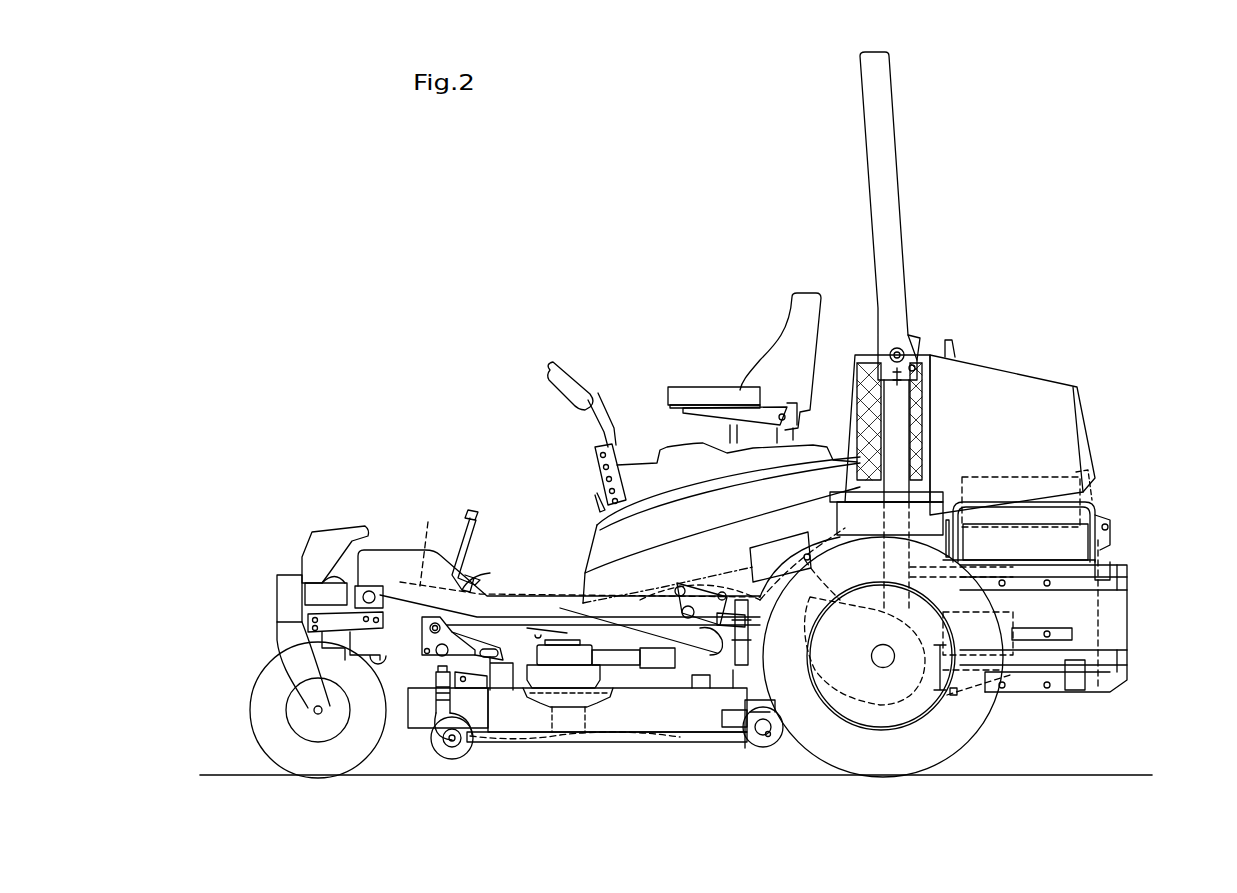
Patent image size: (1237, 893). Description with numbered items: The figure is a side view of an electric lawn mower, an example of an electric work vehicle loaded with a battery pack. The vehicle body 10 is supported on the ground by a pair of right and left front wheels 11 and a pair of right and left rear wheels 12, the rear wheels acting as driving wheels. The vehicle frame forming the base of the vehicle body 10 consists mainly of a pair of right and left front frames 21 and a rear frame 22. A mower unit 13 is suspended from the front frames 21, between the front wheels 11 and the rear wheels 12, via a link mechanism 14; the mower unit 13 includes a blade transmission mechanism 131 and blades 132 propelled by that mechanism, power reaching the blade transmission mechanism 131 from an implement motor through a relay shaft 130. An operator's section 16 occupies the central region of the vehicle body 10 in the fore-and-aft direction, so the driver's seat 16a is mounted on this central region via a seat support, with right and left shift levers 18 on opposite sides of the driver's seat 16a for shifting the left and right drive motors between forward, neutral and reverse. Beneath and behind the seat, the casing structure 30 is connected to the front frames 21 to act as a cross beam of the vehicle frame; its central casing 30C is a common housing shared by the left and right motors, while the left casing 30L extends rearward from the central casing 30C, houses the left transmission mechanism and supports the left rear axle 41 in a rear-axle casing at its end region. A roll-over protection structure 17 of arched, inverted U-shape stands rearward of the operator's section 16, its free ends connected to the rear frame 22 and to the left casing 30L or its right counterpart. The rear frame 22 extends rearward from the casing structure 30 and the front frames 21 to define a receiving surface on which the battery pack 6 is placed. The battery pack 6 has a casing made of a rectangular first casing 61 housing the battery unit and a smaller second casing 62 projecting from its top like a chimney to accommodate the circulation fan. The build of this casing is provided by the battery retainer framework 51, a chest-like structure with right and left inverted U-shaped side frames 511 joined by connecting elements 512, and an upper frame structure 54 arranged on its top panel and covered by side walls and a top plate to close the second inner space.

The vehicle body 10 is at (405, 553).
The front wheels 11 is at (258, 712).
The rear wheels 12 is at (975, 708).
The mower unit 13 is at (662, 742).
The link mechanism 14 is at (418, 657).
The operator's section 16 is at (550, 335).
The driver's seat 16a is at (780, 347).
The roll-over protection structure (ROPS) 17 is at (876, 155).
The shift levers 18 is at (563, 390).
The front frames 21 is at (447, 545).
The rear frame 22 is at (1076, 636).
The casing structure 30 is at (760, 540).
The central casing 30C is at (772, 577).
The left casing 30L is at (908, 680).
The left rear axle 41 is at (878, 663).
The battery pack 6 is at (1012, 467).
The battery retainer framework 51 is at (1092, 505).
The side frames 511 is at (1000, 508).
The connecting elements 512 is at (1065, 632).
The upper frame structure 54 is at (1080, 487).
The first casing 61 is at (1105, 560).
The second casing 62 is at (1058, 468).
The relay shaft 130 is at (663, 660).
The blade transmission mechanism 131 is at (560, 642).
The blades 132 is at (547, 737).